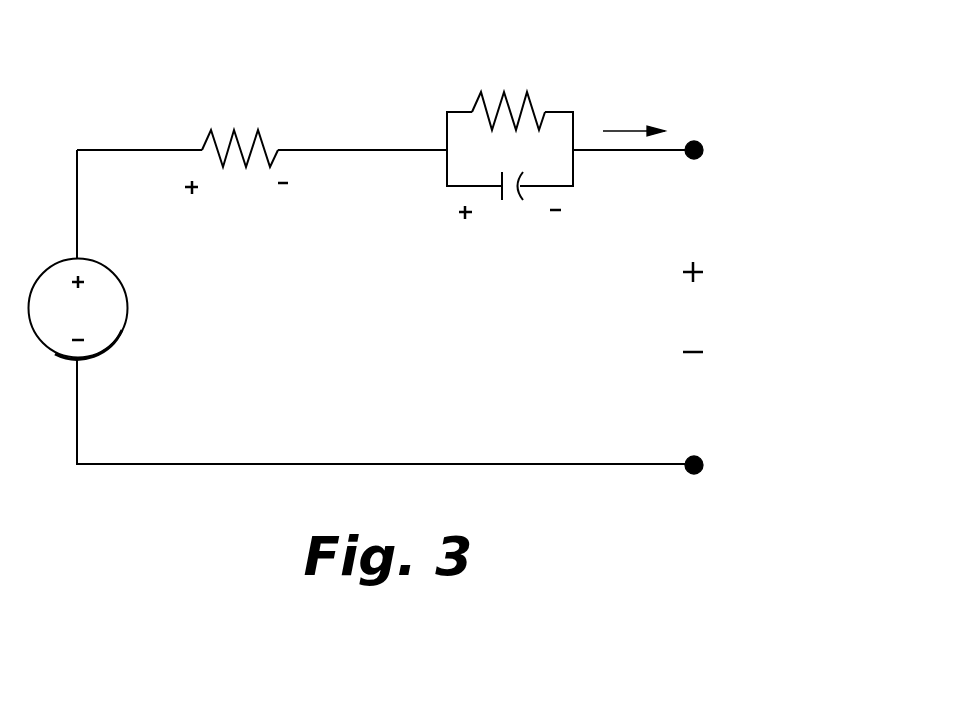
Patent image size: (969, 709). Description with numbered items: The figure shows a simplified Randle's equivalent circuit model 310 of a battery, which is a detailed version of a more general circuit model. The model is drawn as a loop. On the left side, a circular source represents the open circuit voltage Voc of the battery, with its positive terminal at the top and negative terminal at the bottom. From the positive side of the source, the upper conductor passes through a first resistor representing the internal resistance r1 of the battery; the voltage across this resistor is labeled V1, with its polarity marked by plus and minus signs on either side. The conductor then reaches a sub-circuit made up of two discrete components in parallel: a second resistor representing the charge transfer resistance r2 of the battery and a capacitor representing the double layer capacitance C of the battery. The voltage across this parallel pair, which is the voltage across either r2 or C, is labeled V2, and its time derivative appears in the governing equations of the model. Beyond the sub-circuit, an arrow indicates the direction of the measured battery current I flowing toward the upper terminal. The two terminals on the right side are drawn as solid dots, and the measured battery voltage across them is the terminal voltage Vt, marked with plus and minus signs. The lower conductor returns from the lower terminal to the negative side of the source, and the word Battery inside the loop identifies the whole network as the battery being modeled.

The Randle's equivalent circuit model 310 is at (449, 254).
The internal resistance r1 is at (240, 133).
The charge transfer resistance r2 is at (508, 96).
The double layer capacitance C is at (512, 169).
The voltage across internal resistance V1 is at (236, 194).
The voltage across sub-circuit V2 is at (510, 220).
The open circuit voltage Voc is at (101, 309).
The terminal voltage Vt is at (694, 307).
The battery current I is at (634, 121).